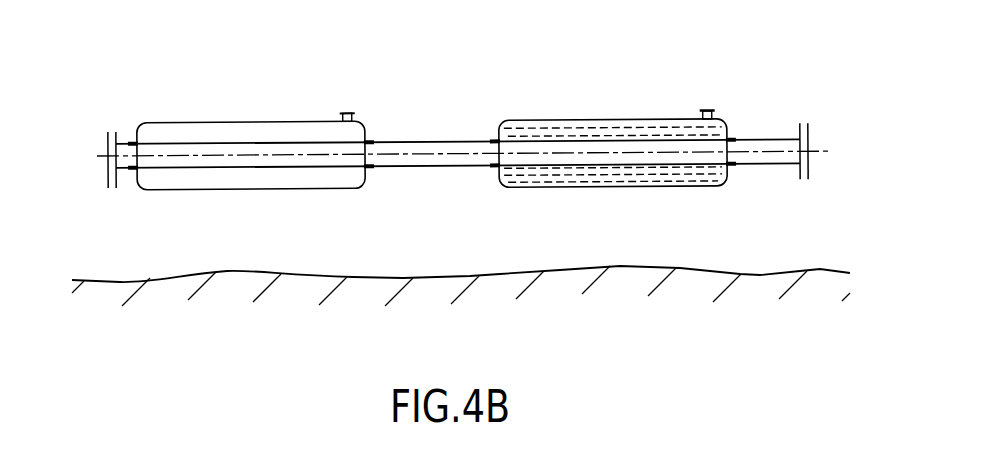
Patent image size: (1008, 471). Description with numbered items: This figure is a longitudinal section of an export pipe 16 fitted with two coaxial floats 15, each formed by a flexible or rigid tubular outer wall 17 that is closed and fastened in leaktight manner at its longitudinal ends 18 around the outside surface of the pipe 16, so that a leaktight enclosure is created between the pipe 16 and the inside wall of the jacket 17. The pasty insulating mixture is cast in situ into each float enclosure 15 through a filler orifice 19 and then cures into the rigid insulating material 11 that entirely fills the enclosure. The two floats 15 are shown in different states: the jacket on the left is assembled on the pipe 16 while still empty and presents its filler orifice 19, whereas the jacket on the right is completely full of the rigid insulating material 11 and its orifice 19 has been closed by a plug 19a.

The rigid insulating material 11 is at (620, 175).
The coaxial float 15 is at (505, 100).
The export pipe 16 is at (440, 145).
The tubular outer wall 17 is at (603, 123).
The longitudinal ends 18 is at (734, 144).
The filler orifice 19 is at (347, 114).
The plug 19a is at (709, 113).